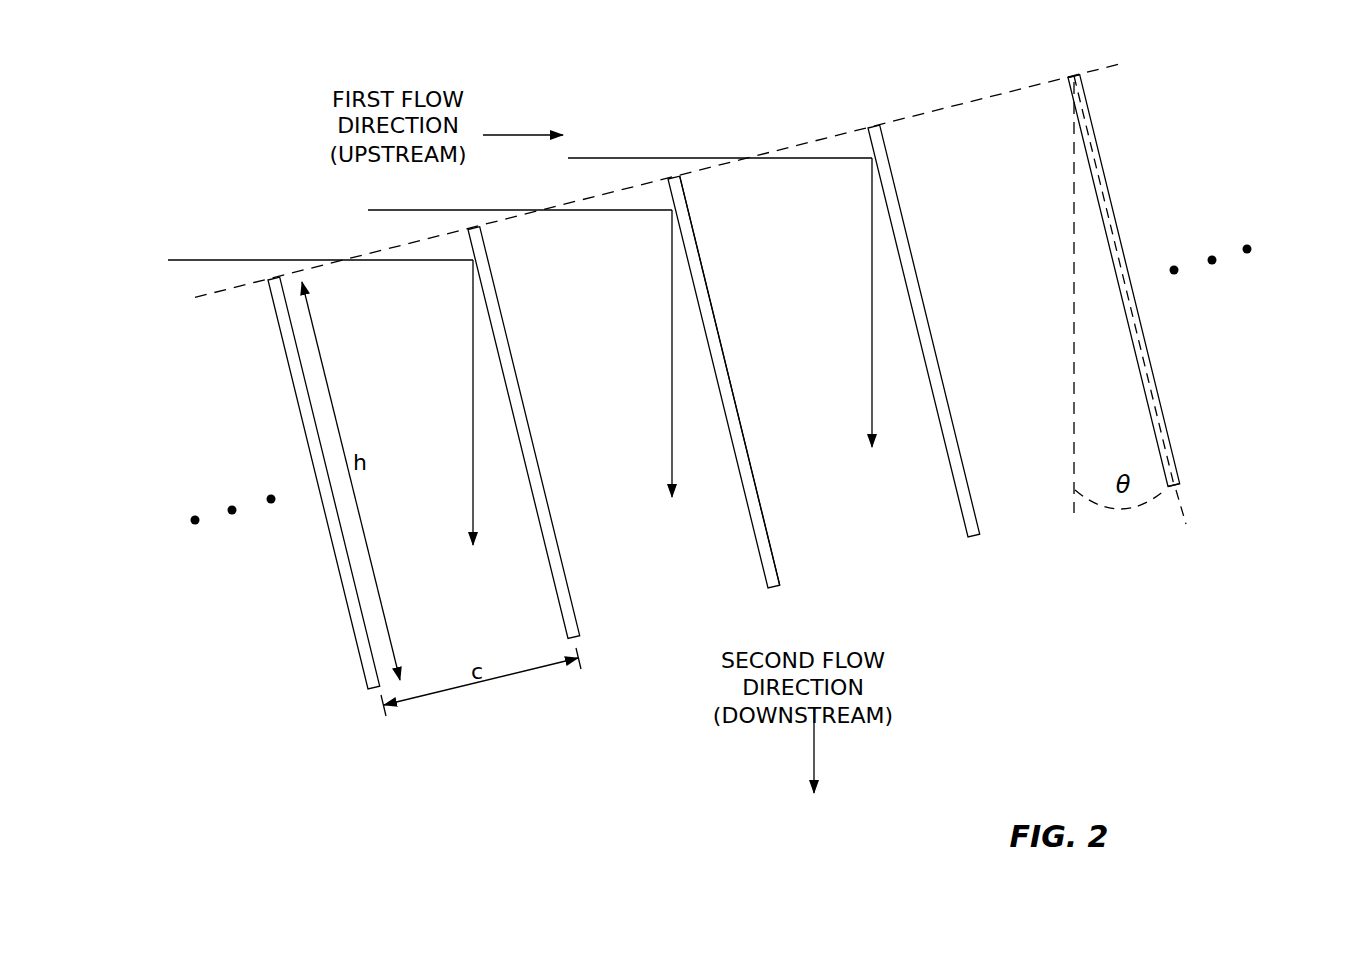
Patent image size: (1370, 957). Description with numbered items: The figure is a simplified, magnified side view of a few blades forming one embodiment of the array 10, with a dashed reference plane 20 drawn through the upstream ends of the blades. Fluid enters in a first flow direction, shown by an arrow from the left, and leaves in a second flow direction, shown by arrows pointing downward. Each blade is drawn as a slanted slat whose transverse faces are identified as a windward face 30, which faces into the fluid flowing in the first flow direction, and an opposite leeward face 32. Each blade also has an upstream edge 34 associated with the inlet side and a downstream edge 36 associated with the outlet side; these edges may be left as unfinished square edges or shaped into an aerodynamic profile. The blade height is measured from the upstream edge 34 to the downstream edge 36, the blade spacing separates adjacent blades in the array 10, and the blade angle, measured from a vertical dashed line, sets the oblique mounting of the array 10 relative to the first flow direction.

The array 10 is at (806, 350).
The upstream plane of blade edges 20 is at (220, 293).
The windward face 30 is at (746, 498).
The leeward face 32 is at (763, 517).
The upstream edge 34 is at (1073, 74).
The downstream edge 36 is at (1171, 486).